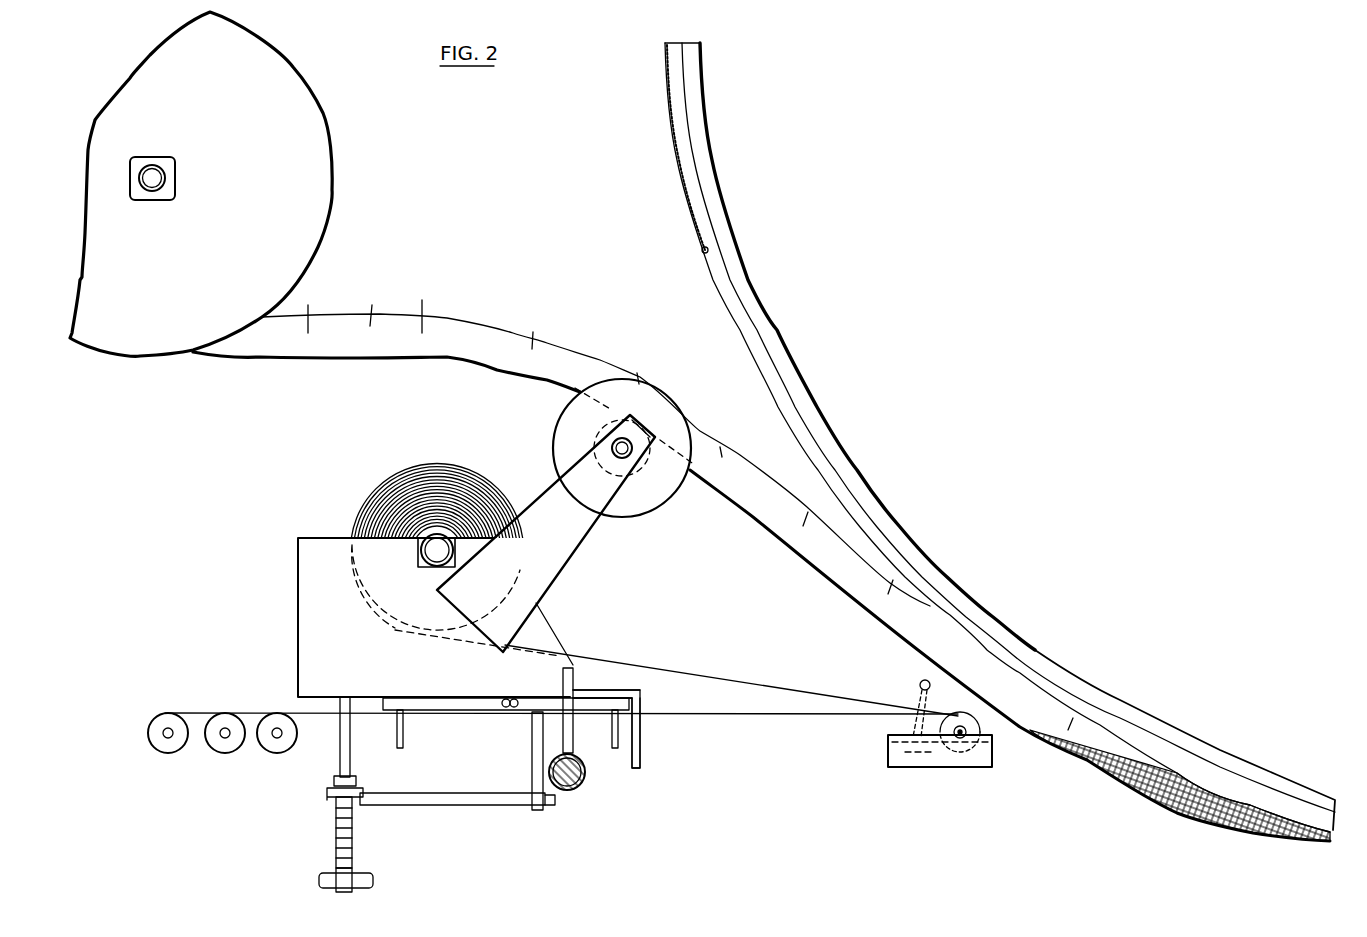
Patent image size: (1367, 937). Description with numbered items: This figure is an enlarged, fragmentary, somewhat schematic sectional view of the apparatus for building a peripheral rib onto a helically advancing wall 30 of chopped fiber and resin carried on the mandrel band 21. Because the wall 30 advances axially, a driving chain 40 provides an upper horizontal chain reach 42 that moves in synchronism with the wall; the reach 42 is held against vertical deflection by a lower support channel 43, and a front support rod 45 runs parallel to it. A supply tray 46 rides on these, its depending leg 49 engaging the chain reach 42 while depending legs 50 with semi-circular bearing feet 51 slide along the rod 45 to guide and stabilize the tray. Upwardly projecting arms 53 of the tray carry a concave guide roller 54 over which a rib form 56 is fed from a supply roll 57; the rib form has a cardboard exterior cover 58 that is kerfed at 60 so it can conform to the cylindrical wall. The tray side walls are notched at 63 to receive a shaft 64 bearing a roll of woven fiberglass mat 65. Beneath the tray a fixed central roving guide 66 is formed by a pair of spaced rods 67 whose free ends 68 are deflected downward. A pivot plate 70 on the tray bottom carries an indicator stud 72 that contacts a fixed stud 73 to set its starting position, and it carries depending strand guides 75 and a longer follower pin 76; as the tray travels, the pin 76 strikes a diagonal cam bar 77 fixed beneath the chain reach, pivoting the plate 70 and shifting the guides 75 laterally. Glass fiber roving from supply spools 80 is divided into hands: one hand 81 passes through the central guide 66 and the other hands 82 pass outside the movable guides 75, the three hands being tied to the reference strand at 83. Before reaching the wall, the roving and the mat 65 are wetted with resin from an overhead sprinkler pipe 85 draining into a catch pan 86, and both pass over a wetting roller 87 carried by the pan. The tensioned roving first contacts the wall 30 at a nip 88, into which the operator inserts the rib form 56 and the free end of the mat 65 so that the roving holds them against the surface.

The band 21 is at (752, 296).
The wall 30 is at (728, 280).
The driving chain 40 is at (332, 832).
The upper horizontal chain reach 42 is at (335, 777).
The lower support channel 43 is at (327, 794).
The front support rod 45 is at (572, 785).
The supply tray 46 is at (290, 597).
The depending leg 49 is at (351, 748).
The depending legs 50 is at (573, 741).
The semi-circular bearing feet 51 is at (586, 772).
The arms 53 is at (577, 540).
The guide roller 54 is at (660, 503).
The rib form 56 is at (492, 331).
The supply roll 57 is at (322, 212).
The cardboard exterior cover 58 is at (372, 305).
The kerf 60 is at (309, 306).
The notch 63 is at (423, 566).
The shaft 64 is at (418, 551).
The mat 65 is at (384, 487).
The central roving guide 66 is at (646, 693).
The rods 67 is at (620, 690).
The free ends 68 is at (641, 741).
The pivot plate 70 is at (463, 711).
The indicator stud 72 is at (505, 708).
The fixed stud 73 is at (514, 708).
The strand guides 75 is at (403, 748).
The follower pin 76 is at (538, 810).
The cam bar 77 is at (422, 806).
The supply spools 80 is at (183, 747).
The roving hand 81 is at (317, 713).
The roving hand 82 is at (668, 108).
The tie point 83 is at (702, 249).
The overhead sprinkler pipe 85 is at (920, 682).
The catch pan 86 is at (920, 755).
The wetting roller 87 is at (965, 726).
The nip 88 is at (1100, 762).